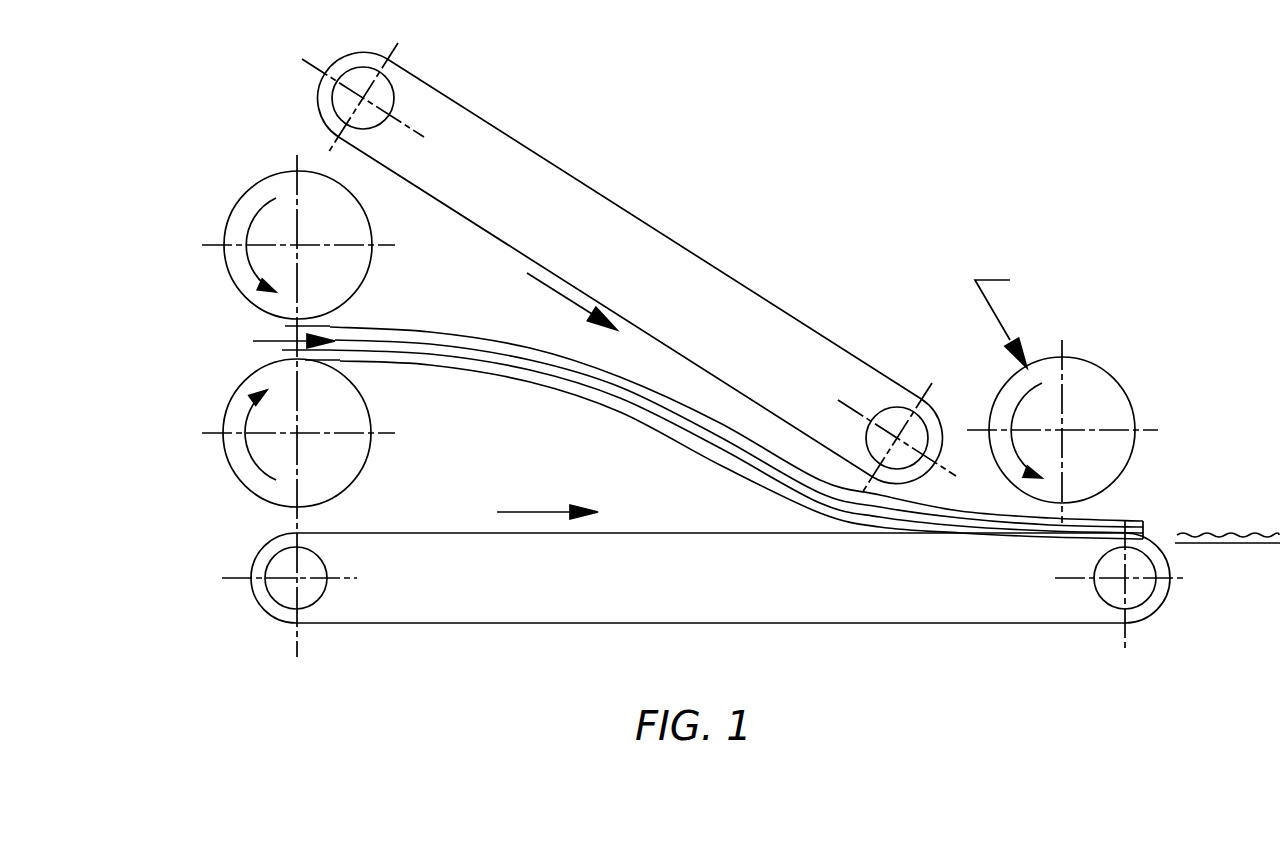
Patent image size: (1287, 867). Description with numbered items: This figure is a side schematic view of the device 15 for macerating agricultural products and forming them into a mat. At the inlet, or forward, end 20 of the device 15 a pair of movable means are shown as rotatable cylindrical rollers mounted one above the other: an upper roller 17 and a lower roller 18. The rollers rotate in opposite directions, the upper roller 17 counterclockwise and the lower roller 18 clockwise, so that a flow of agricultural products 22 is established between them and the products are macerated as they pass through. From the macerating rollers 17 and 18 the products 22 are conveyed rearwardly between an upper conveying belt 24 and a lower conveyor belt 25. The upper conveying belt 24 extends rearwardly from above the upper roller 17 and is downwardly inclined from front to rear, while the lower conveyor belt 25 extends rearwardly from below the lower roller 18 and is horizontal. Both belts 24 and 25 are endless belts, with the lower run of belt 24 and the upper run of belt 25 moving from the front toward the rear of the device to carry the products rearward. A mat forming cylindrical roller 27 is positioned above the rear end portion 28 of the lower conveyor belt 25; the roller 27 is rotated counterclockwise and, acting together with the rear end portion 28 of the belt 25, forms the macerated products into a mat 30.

The device 15 is at (778, 165).
The upper roller 17 is at (230, 211).
The lower roller 18 is at (228, 414).
The inlet end 20 is at (172, 335).
The agricultural products 22 is at (334, 331).
The upper conveying belt 24 is at (578, 180).
The lower conveyor belt 25 is at (810, 622).
The mat forming cylindrical roller 27 is at (1128, 386).
The rear end portion 28 is at (1082, 540).
The mat 30 is at (1190, 548).